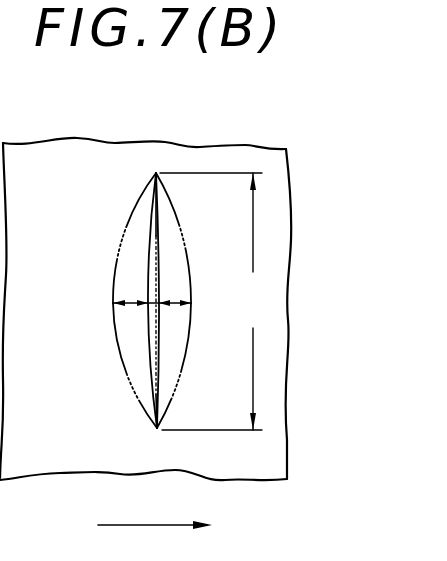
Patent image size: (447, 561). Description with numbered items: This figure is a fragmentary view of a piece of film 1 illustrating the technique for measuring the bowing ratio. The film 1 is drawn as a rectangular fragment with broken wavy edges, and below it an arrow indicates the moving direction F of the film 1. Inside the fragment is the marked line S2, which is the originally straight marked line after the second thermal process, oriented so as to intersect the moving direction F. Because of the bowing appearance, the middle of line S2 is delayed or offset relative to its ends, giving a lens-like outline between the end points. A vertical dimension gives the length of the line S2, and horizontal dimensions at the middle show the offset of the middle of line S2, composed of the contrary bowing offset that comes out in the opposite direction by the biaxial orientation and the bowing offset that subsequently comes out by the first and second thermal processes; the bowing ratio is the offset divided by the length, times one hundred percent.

The film 1 is at (276, 159).
The marked line S2 is at (152, 223).
The moving direction of the film F is at (155, 511).